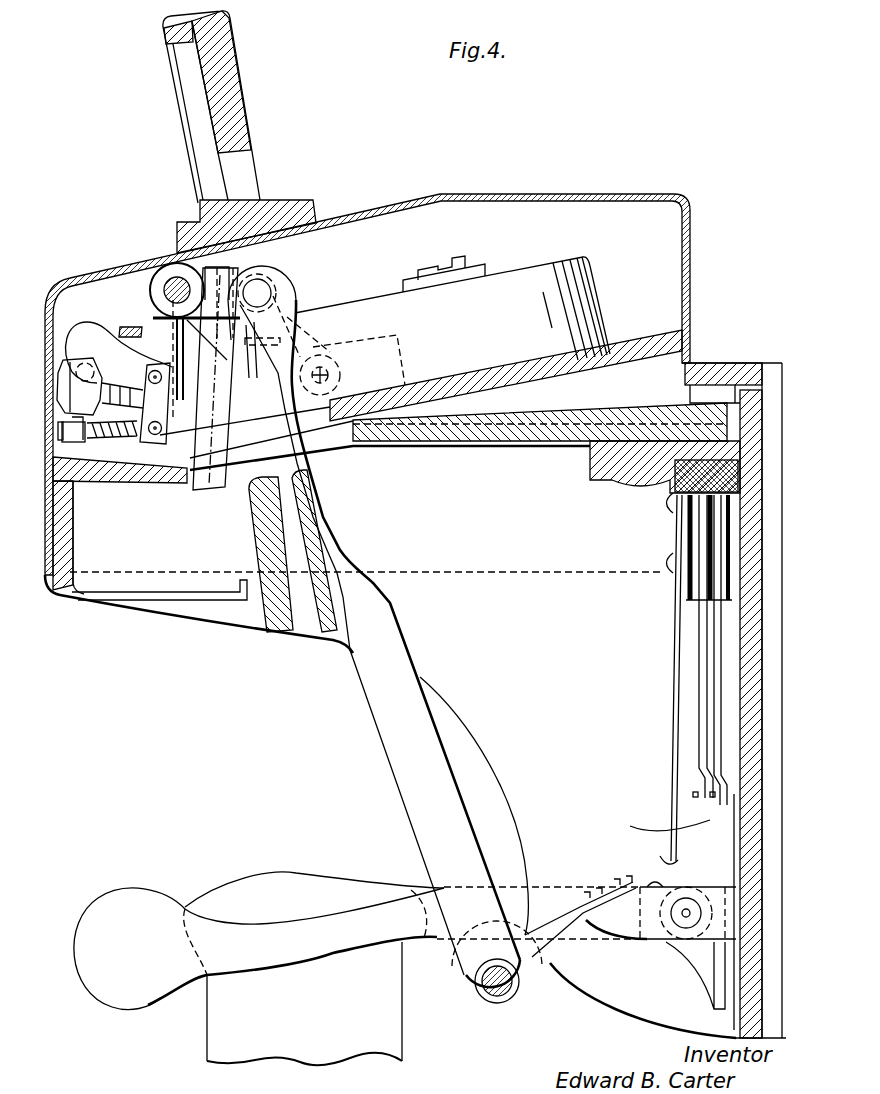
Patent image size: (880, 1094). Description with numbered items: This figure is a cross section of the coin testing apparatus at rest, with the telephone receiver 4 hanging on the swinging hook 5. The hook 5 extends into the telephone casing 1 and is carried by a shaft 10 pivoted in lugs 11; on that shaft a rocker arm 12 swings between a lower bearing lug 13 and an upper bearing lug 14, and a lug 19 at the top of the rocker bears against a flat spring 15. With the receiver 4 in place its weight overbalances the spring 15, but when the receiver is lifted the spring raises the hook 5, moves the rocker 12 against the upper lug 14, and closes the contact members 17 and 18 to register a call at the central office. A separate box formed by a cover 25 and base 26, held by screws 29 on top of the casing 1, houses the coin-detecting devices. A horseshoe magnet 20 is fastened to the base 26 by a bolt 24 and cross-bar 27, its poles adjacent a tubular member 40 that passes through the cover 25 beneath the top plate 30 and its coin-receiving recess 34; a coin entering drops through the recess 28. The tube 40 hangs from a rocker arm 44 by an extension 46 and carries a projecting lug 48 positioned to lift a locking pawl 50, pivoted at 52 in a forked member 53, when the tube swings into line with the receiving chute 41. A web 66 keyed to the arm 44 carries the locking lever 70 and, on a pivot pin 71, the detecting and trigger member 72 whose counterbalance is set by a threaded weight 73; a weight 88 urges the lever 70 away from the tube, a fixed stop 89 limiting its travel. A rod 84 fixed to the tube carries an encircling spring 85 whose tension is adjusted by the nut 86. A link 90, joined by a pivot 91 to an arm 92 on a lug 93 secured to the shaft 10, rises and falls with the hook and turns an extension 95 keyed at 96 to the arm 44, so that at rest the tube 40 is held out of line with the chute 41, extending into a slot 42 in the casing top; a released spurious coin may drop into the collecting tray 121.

The casing 1 is at (62, 601).
The receiver 4 is at (280, 879).
The swinging hook 5 is at (148, 905).
The shaft 10 is at (680, 920).
The lugs 11 is at (725, 913).
The rocker arm 12 is at (707, 964).
The bearing lug 13 is at (740, 990).
The bearing lug 14 is at (740, 831).
The flat spring 15 is at (679, 761).
The contact member 17 is at (699, 813).
The contact member 18 is at (654, 822).
The lug 19 is at (657, 851).
The horseshoe magnet 20 is at (533, 274).
The bolt 24 is at (460, 258).
The cover 25 is at (648, 194).
The base 26 is at (628, 346).
The cross-bar 27 is at (483, 268).
The recess 28 is at (233, 242).
The screws 29 is at (100, 481).
The top plate 30 is at (233, 86).
The coin-receiving recess 34 is at (185, 137).
The tubular member 40 is at (230, 387).
The receiving chute 41 is at (267, 628).
The slot 42 is at (240, 463).
The rocker arm 44 is at (163, 287).
The extension 46 is at (150, 293).
The projecting lug 48 is at (250, 342).
The locking pawl 50 is at (292, 273).
The pivot 52 is at (333, 348).
The forked member 53 is at (407, 361).
The web 66 is at (156, 332).
The locking lever 70 is at (180, 263).
The pivot pin 71 is at (155, 436).
The detecting and trigger member 72 is at (60, 381).
The weight 73 is at (60, 366).
The extending rod 84 is at (62, 426).
The encircling spring 85 is at (116, 440).
The adjustable nut 86 is at (62, 438).
The weight 88 is at (82, 331).
The fixed stop 89 is at (84, 330).
The link 90 is at (397, 636).
The pivot 91 is at (490, 1000).
The arm 92 is at (540, 964).
The lug 93 is at (653, 896).
The extension 95 is at (205, 334).
The key 96 is at (150, 287).
The collecting chute, tray, or box 121 is at (193, 624).